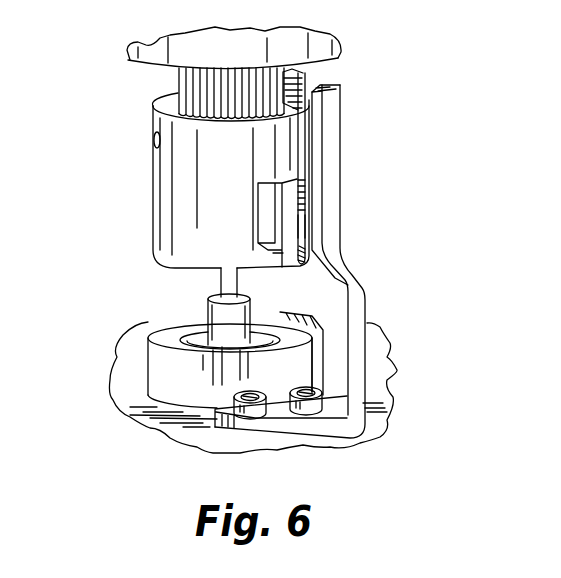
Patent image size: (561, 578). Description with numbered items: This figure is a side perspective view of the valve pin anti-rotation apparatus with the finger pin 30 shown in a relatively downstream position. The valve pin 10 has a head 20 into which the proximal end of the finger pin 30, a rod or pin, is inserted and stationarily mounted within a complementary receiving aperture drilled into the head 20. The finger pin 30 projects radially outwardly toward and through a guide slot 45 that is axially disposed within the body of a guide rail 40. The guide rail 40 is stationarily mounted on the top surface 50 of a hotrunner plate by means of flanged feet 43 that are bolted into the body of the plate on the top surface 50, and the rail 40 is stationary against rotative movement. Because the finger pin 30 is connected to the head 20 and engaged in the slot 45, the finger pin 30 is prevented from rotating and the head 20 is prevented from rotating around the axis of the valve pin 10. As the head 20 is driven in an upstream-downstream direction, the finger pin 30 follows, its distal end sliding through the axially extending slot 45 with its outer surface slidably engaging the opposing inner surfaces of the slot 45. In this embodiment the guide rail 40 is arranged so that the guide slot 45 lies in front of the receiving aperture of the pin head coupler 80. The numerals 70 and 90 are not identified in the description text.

The valve pin 10 is at (220, 279).
The head 20 is at (280, 206).
The finger pin 30 is at (285, 222).
The guide rail 40 is at (368, 308).
The flanged feet 43 is at (285, 420).
The guide slot 45 is at (300, 250).
The top surface 50 is at (135, 358).
The knob 70 is at (128, 50).
The pin head coupler 80 is at (153, 165).
The nuts 90 is at (247, 410).